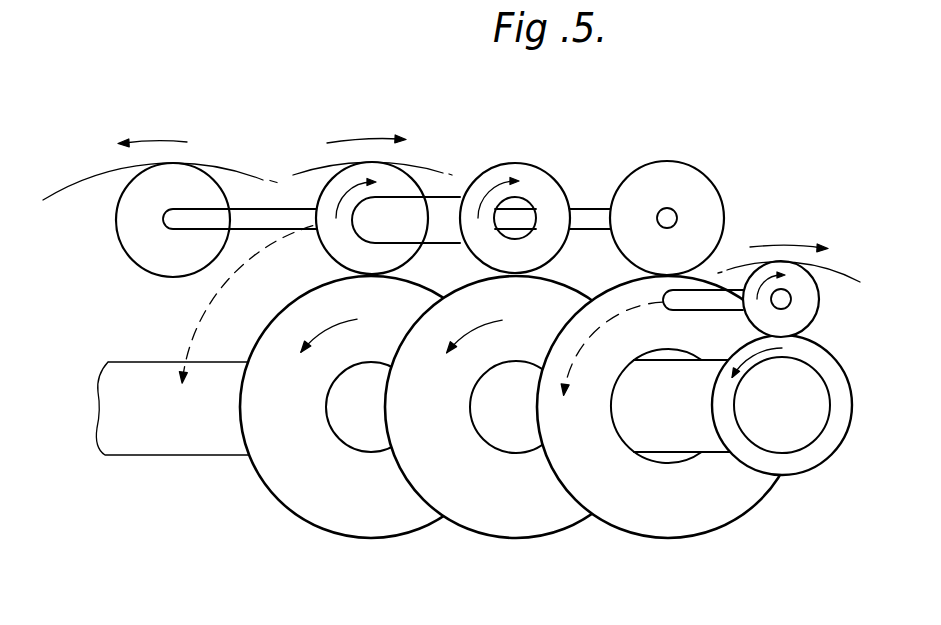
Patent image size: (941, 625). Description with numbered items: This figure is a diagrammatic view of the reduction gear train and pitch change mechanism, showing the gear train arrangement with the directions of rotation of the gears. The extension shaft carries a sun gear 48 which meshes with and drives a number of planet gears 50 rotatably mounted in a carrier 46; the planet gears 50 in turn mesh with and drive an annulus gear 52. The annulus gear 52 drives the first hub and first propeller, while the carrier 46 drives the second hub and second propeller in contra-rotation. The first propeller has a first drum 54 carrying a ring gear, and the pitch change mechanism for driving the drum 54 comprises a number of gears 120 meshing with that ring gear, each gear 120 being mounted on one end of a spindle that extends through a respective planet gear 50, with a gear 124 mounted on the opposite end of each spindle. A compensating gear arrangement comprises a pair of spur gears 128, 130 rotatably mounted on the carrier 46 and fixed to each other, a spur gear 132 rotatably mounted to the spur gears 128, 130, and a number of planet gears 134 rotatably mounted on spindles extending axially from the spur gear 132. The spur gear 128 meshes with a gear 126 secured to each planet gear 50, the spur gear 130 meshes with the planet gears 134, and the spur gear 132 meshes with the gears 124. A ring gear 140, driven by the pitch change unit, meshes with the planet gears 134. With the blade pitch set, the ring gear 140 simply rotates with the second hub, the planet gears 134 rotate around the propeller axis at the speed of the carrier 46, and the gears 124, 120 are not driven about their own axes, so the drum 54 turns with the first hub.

The carrier 46 is at (180, 386).
The sun gear 48 is at (290, 512).
The planet gears 50 is at (327, 248).
The annulus gear 52 is at (423, 165).
The first drum 54 is at (212, 165).
The gears 120 is at (158, 270).
The gear 124 is at (673, 163).
The gear 126 is at (537, 168).
The spur gear 128 is at (517, 540).
The spur gear 130 is at (847, 377).
The spur gear 132 is at (680, 536).
The planet gears 134 is at (822, 300).
The ring gear 140 is at (840, 270).